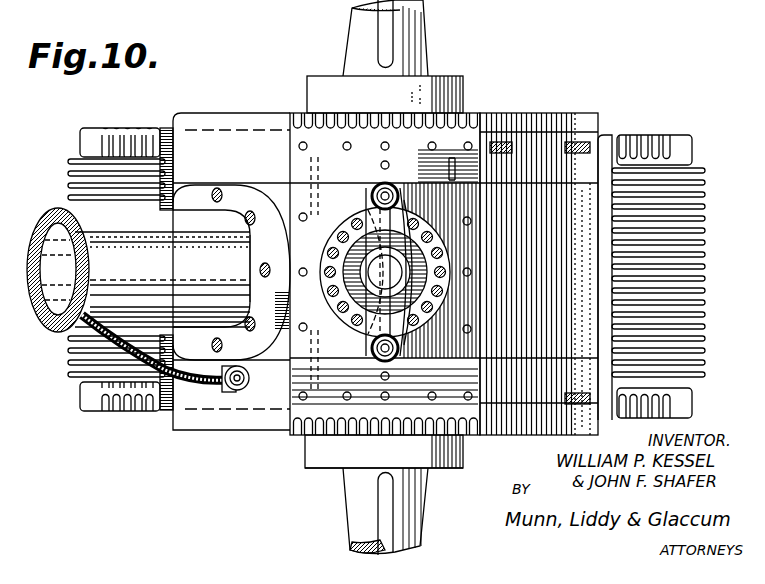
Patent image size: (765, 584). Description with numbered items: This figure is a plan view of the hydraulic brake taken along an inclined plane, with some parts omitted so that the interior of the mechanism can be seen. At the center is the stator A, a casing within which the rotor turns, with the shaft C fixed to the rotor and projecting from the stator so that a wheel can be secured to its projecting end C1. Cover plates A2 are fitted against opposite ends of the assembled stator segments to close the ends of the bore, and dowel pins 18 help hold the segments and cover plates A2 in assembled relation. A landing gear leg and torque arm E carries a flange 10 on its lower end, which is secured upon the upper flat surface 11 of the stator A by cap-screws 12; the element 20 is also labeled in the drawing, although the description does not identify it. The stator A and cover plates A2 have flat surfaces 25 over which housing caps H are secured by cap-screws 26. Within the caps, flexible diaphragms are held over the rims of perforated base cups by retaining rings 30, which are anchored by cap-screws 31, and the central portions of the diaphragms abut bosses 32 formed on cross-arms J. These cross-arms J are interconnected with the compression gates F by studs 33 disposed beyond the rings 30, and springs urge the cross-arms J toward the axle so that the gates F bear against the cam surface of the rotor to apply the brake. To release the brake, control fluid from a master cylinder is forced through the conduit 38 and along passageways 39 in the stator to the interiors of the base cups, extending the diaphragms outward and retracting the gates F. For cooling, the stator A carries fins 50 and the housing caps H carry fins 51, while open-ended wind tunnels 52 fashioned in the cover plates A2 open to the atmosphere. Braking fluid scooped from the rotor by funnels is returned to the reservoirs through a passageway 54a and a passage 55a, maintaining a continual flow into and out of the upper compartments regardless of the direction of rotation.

The stator A is at (270, 110).
The cover plates A2 is at (537, 100).
The shaft C is at (428, 506).
The projecting end of the shaft C1 is at (430, 46).
The landing gear leg and torque arm E is at (56, 205).
The compression gates F is at (332, 258).
The housing caps H is at (66, 363).
The cross-arms J is at (351, 257).
The flange 10 is at (208, 185).
The upper flat surface 11 is at (277, 186).
The cap-screws 12 is at (219, 190).
The dowel pins 18 is at (445, 168).
The conduit flange 20 is at (463, 95).
The flat surfaces 25 is at (606, 137).
The cap-screws 26 is at (343, 146).
The retaining rings 30 is at (345, 324).
The cap-screws 31 is at (354, 222).
The bosses 32 is at (326, 302).
The studs 33 is at (372, 197).
The conduit 38 is at (212, 392).
The passageways 39 is at (326, 284).
The fins 50 is at (468, 432).
The fins 51 is at (80, 143).
The wind tunnels 52 is at (582, 140).
The passageway 54a is at (384, 455).
The passage 55a is at (380, 164).